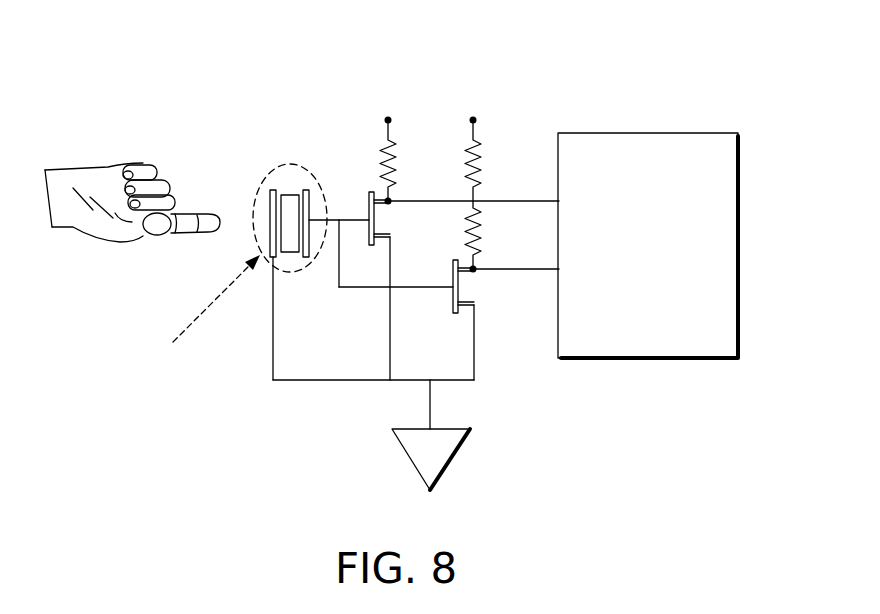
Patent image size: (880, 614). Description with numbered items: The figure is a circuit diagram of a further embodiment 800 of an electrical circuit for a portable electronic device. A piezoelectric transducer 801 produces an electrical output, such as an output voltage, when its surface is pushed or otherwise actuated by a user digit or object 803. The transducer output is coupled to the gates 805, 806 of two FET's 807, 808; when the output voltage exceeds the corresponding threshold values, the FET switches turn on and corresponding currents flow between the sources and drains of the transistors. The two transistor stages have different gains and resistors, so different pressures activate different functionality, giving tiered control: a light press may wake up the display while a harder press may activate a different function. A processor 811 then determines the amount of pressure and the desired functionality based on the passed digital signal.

The further embodiment of an electrical circuit 800 is at (618, 46).
The piezoelectric transducer 801 is at (197, 318).
The user digit or object 803 is at (108, 163).
The gate 805 is at (355, 213).
The gate 806 is at (439, 281).
The FET 807 is at (388, 206).
The FET 808 is at (475, 278).
The processor 811 is at (703, 132).